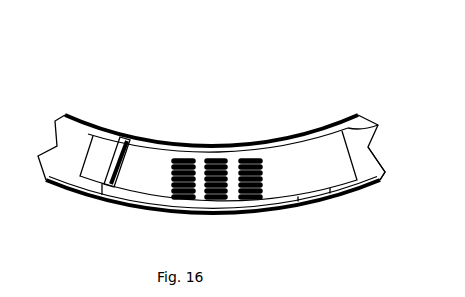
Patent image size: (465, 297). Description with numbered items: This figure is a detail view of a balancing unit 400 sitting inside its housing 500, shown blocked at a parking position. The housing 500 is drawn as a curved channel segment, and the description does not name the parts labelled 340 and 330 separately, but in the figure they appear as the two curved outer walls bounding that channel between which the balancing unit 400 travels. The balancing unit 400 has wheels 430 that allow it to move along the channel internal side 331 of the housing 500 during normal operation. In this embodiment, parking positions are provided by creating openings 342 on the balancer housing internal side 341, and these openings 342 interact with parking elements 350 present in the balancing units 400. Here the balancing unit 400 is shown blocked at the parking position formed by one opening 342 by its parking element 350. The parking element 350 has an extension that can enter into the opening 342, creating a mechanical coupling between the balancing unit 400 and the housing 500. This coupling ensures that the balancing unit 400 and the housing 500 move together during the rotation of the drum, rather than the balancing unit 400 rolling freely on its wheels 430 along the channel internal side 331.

The housing 500 is at (260, 84).
The balancing unit 400 is at (313, 147).
The first frame 340 is at (350, 113).
The balancer housing internal side 341 is at (379, 126).
The channel internal side 331 is at (384, 173).
The second frame 330 is at (306, 208).
The parking element 350 is at (114, 159).
The opening 342 is at (126, 141).
The wheels 430 is at (80, 191).